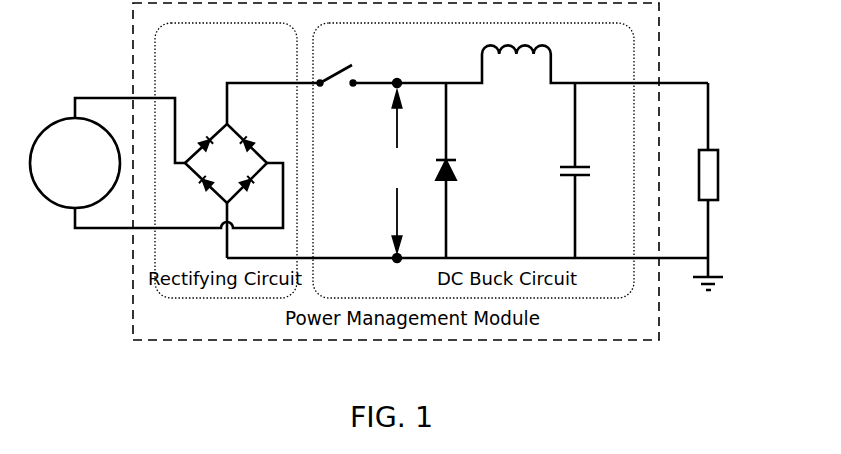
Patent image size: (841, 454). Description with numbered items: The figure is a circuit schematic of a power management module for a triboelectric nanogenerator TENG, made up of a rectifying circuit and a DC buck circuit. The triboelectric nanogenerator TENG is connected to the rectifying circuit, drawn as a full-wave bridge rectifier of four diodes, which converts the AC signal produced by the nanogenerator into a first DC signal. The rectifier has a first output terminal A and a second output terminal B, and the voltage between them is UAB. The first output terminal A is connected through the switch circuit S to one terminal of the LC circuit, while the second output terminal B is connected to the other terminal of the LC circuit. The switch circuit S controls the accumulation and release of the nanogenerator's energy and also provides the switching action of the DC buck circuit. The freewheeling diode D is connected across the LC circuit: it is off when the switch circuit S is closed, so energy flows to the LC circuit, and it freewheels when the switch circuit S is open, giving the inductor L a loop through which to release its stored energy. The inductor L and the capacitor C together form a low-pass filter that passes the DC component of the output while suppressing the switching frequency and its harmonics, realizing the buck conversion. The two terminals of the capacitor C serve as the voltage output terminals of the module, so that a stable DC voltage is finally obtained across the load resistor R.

The triboelectric nanogenerator TENG is at (156, 163).
The switch circuit S is at (357, 65).
The first output terminal A is at (417, 71).
The second output terminal B is at (467, 272).
The voltage across the first and second output terminals UAB is at (399, 171).
The freewheeling diode D is at (456, 170).
The inductor L is at (510, 66).
The capacitor C is at (634, 170).
The load resistor R is at (717, 186).